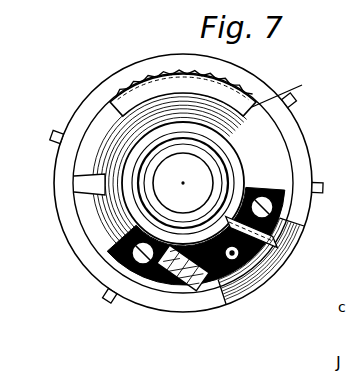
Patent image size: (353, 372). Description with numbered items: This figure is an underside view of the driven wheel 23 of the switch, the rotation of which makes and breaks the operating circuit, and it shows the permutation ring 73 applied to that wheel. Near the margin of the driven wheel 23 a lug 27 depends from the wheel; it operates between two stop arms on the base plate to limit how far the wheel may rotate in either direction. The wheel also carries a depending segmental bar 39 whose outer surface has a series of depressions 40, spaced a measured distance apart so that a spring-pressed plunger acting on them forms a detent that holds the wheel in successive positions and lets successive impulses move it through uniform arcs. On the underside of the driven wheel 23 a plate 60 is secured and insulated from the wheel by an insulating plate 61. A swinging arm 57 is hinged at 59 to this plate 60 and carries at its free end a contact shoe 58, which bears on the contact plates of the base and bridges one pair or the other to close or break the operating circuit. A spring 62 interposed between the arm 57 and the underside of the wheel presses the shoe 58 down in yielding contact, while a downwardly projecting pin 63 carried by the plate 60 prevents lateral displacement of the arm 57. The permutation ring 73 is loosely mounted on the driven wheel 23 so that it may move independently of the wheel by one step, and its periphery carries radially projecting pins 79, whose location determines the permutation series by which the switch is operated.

The driven wheel 23 is at (277, 148).
The lug 27 is at (80, 176).
The segmental bar 39 is at (289, 90).
The depressions 40 is at (180, 75).
The swinging arm 57 is at (235, 276).
The contact shoe 58 is at (247, 278).
The hinge 59 is at (183, 292).
The plate 60 is at (205, 290).
The insulating plate 61 is at (283, 207).
The spring 62 is at (282, 243).
The pin 63 is at (253, 274).
The permutation ring 73 is at (258, 87).
The pins 79 is at (297, 103).